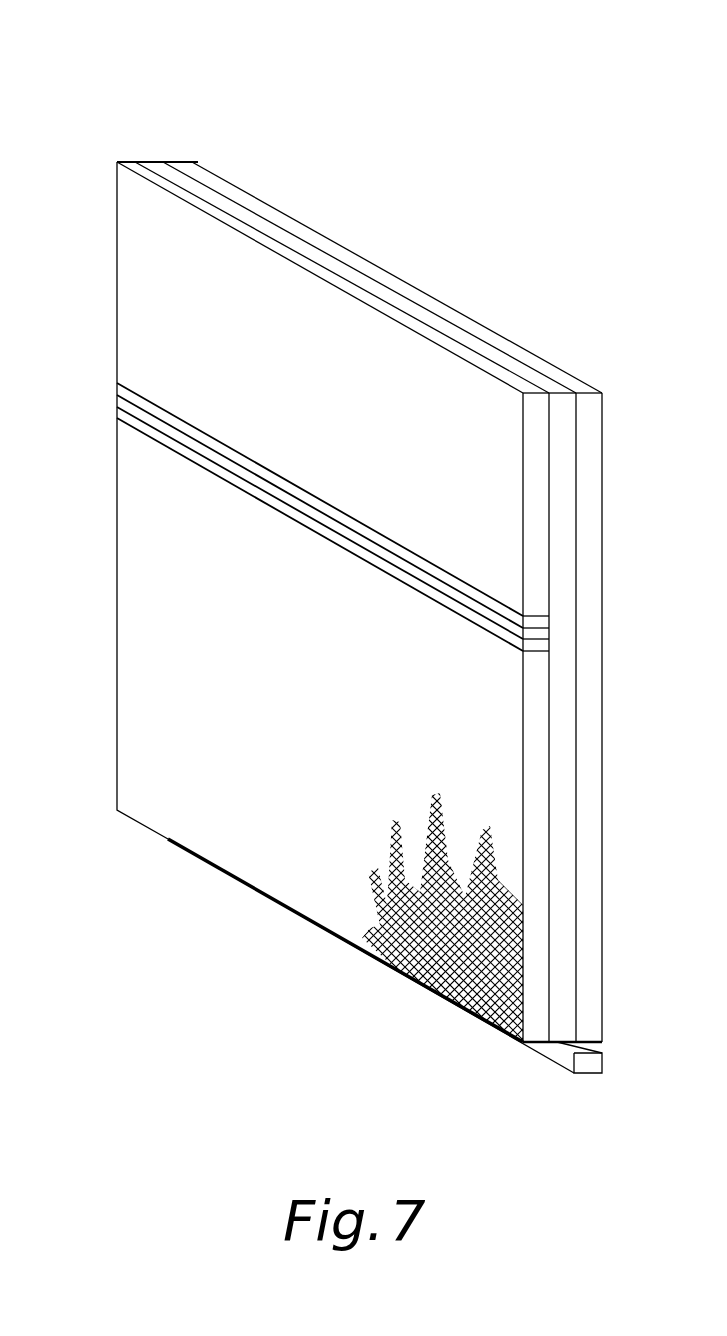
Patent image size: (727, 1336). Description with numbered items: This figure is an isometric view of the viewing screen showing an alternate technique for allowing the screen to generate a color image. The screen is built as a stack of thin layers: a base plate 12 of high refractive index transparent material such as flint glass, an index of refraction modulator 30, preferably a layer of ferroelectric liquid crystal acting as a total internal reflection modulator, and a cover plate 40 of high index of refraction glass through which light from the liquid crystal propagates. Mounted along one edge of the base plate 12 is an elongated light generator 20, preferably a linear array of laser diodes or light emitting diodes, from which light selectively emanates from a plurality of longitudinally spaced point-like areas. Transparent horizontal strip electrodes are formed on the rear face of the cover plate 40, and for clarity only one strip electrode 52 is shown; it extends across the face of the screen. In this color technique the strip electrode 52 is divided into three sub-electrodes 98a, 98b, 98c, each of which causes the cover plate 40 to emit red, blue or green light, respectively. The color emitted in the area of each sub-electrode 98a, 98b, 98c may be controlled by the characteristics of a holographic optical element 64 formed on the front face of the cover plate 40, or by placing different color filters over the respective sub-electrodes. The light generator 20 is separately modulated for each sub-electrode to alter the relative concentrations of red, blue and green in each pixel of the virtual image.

The base plate 12 is at (193, 163).
The index of refraction modulator 30 is at (163, 163).
The cover plate 40 is at (133, 163).
The strip electrode 52 is at (172, 519).
The sub-electrode 98a is at (270, 475).
The sub-electrode 98b is at (305, 510).
The sub-electrode 98c is at (367, 557).
The holographic optical element 64 is at (412, 973).
The light generator 20 is at (590, 1077).